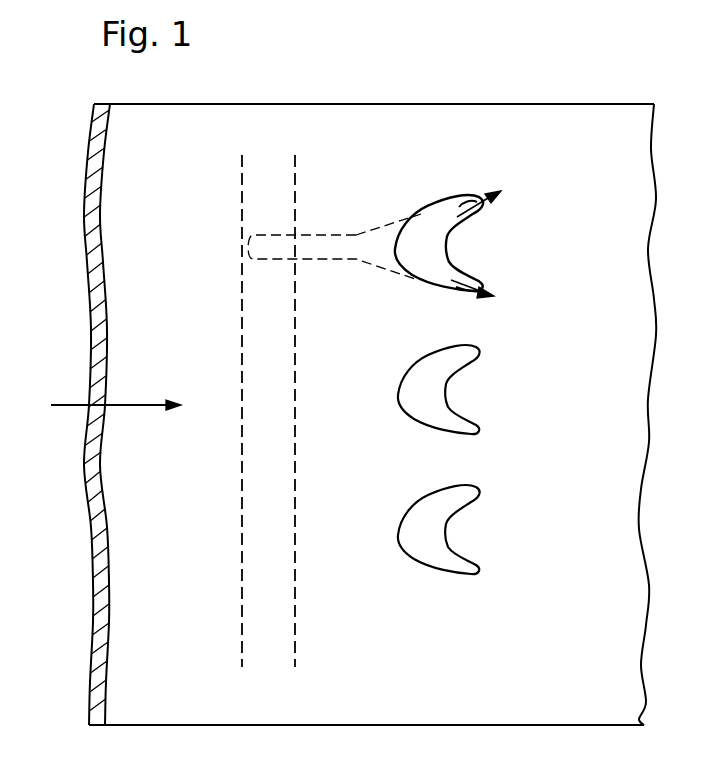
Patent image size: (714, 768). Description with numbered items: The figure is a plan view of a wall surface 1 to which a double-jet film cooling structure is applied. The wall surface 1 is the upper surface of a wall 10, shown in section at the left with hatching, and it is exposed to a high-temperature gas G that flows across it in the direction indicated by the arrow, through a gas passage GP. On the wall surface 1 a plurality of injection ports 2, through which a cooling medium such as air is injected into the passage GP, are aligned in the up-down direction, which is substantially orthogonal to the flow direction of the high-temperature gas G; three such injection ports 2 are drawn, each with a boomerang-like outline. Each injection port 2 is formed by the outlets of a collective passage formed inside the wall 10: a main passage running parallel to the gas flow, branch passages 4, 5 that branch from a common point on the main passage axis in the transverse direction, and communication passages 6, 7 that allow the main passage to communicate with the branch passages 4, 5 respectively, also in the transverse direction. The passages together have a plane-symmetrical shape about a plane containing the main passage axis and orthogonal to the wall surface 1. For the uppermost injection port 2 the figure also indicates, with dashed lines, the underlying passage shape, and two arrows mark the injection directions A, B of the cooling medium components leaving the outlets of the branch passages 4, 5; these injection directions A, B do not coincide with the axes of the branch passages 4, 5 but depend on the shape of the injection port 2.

The wall surface 1 is at (133, 175).
The injection port 2 is at (412, 238).
The branch passage 4 is at (460, 207).
The branch passage 5 is at (458, 287).
The communication passage 6 is at (438, 231).
The communication passage 7 is at (436, 258).
The wall 10 is at (97, 615).
The high-temperature gas G is at (72, 402).
The passage of the high-temperature gas GP is at (187, 486).
The injection direction A is at (489, 198).
The injection direction B is at (490, 291).